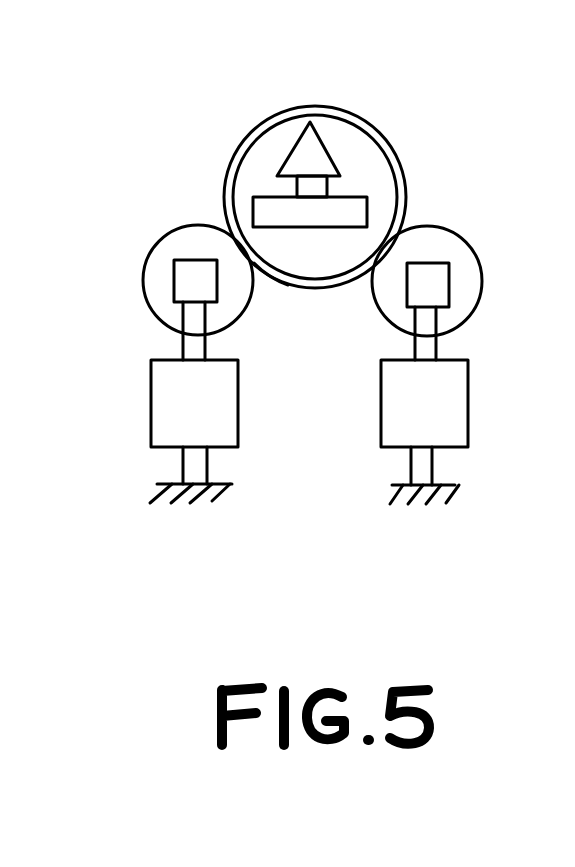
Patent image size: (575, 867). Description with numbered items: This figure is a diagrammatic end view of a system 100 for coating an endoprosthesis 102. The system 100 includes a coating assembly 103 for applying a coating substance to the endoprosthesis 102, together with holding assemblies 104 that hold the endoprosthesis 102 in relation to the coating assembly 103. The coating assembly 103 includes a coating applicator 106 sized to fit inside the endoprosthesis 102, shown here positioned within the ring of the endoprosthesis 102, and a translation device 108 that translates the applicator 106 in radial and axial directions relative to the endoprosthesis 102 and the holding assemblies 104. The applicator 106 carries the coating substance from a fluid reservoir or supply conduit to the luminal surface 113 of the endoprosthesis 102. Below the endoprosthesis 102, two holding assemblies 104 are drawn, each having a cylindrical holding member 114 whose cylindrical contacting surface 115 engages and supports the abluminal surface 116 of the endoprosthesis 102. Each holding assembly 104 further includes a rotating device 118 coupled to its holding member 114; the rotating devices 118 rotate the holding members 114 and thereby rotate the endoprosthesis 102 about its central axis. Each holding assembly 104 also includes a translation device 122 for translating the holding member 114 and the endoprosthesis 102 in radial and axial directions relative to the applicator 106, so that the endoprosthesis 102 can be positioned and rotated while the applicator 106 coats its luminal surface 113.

The system 100 is at (476, 185).
The endoprosthesis 102 is at (377, 130).
The coating assembly 103 is at (358, 172).
The holding assemblies 104 is at (273, 460).
The coating applicator 106 is at (290, 153).
The translation device 108 is at (255, 210).
The luminal surface 113 is at (339, 141).
The cylindrical holding members 114 is at (145, 293).
The cylindrical contacting surfaces 115 is at (235, 323).
The abluminal surface 116 is at (273, 279).
The rotating devices 118 is at (198, 260).
The translation device 122 is at (238, 418).